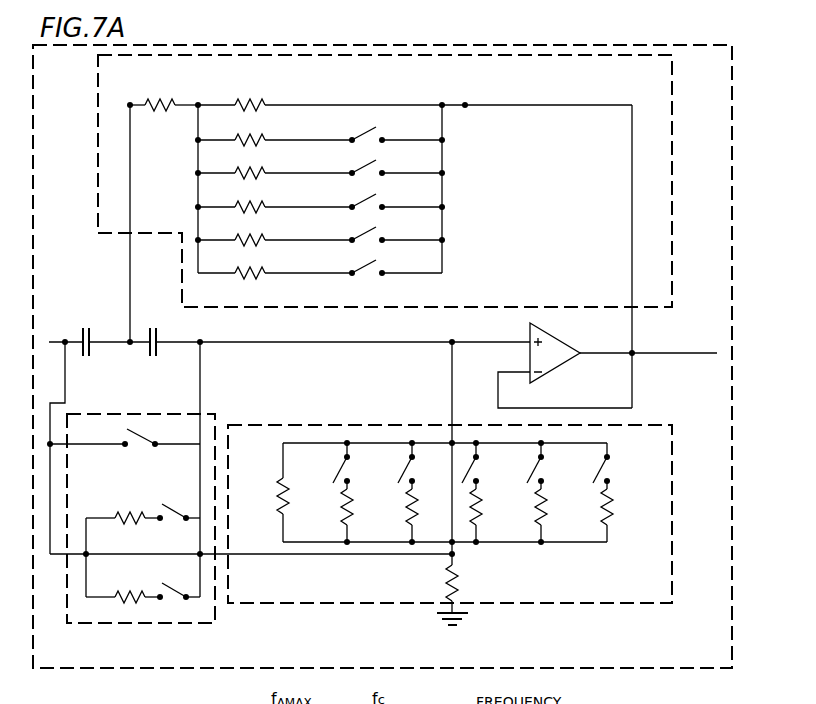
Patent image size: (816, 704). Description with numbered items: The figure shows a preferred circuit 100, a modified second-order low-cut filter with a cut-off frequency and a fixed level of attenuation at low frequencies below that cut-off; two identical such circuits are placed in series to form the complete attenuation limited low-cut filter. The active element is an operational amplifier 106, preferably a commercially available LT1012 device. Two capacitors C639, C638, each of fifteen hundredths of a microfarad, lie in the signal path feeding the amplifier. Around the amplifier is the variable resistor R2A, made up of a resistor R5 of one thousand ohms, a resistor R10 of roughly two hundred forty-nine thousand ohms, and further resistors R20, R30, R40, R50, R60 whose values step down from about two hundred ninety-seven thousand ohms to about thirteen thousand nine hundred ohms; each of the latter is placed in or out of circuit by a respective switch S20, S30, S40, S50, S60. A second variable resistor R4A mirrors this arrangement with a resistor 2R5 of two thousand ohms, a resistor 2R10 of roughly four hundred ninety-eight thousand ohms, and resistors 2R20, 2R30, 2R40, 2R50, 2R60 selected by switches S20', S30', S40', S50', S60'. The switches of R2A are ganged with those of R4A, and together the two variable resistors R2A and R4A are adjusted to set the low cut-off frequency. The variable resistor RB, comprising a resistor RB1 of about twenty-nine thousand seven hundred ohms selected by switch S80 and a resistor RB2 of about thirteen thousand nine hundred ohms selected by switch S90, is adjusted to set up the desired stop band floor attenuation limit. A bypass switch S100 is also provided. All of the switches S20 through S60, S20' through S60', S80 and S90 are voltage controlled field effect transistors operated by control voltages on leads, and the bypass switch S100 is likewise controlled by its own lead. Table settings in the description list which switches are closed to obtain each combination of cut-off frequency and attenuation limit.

The variable resistor R2A is at (656, 89).
The resistor R5 is at (162, 96).
The resistor R10 is at (415, 96).
The resistor R20 is at (275, 131).
The resistor R30 is at (275, 164).
The resistor R40 is at (275, 198).
The resistor R50 is at (275, 231).
The resistor R60 is at (275, 264).
The switch S20 is at (395, 129).
The switch S30 is at (395, 162).
The switch S40 is at (395, 196).
The switch S50 is at (395, 229).
The switch S60 is at (395, 262).
The capacitor C639 is at (90, 357).
The capacitor C638 is at (154, 357).
The bypass switch S100 is at (125, 435).
The variable resistor RB is at (142, 616).
The resistor RB1 is at (123, 509).
The resistor RB2 is at (123, 589).
The switch S80 is at (178, 502).
The switch S90 is at (178, 581).
The operational amplifier 106 is at (558, 361).
The variable resistor R4A is at (722, 444).
The resistor 2R10 is at (264, 492).
The resistor 2R20 is at (325, 513).
The resistor 2R30 is at (390, 513).
The resistor 2R40 is at (455, 513).
The resistor 2R50 is at (520, 513).
The resistor 2R60 is at (586, 511).
The switch S20' is at (357, 462).
The switch S30' is at (422, 462).
The switch S40' is at (486, 462).
The switch S50' is at (551, 462).
The switch S60' is at (617, 463).
The resistor 2R5 is at (464, 595).
The circuit 100 is at (697, 670).